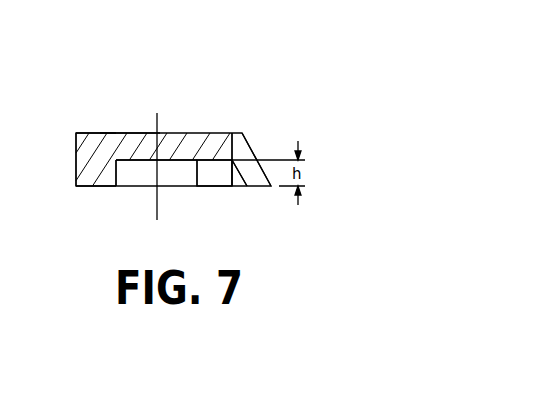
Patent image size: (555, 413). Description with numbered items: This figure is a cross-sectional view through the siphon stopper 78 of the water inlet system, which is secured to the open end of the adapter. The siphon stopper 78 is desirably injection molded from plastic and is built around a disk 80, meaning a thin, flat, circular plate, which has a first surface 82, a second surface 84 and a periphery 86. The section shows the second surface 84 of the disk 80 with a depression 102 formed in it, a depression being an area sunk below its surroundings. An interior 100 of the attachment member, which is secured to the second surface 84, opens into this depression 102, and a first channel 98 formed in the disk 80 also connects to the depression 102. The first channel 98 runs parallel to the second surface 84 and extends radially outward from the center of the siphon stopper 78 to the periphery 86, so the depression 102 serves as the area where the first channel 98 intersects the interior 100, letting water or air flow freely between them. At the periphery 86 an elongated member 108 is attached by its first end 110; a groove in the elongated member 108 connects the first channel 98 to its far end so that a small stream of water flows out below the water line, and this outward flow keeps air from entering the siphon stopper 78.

The siphon stopper 78 is at (255, 103).
The disk 80 is at (88, 133).
The first surface 82 is at (113, 133).
The periphery 86 is at (76, 152).
The second surface 84 is at (90, 186).
The interior of the attachment member 100 is at (116, 172).
The depression 102 is at (169, 168).
The first channel 98 is at (218, 178).
The first end 110 is at (232, 133).
The elongated member 108 is at (252, 140).